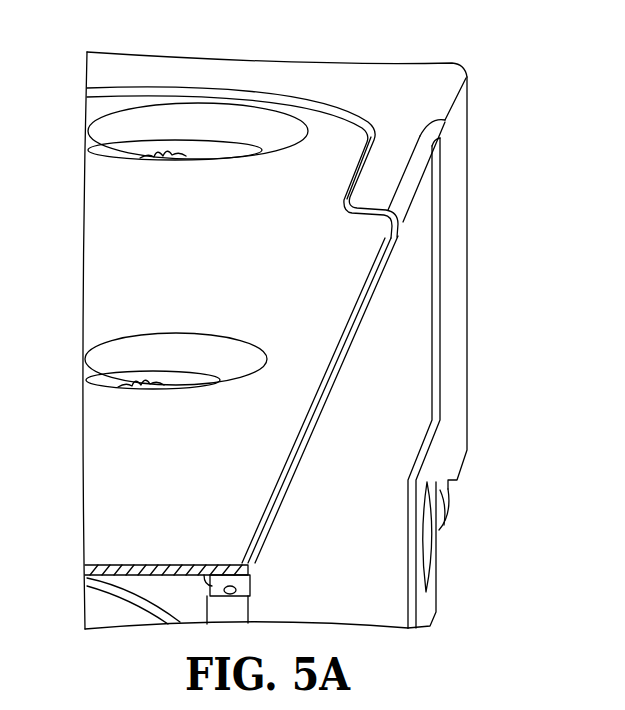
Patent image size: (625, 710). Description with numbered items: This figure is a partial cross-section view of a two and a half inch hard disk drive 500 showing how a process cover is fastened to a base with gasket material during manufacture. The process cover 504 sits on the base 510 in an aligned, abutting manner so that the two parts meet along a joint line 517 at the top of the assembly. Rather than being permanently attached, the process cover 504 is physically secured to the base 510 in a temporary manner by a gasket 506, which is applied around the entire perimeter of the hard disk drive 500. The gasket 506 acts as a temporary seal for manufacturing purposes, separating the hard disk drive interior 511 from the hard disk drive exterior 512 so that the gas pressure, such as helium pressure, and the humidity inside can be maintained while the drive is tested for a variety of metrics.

The hard disk drive 500 is at (299, 363).
The process cover 504 is at (117, 476).
The gasket 506 is at (232, 582).
The base 510 is at (409, 94).
The hard disk drive interior 511 is at (98, 606).
The hard disk drive exterior 512 is at (510, 279).
The joint line 517 is at (300, 97).